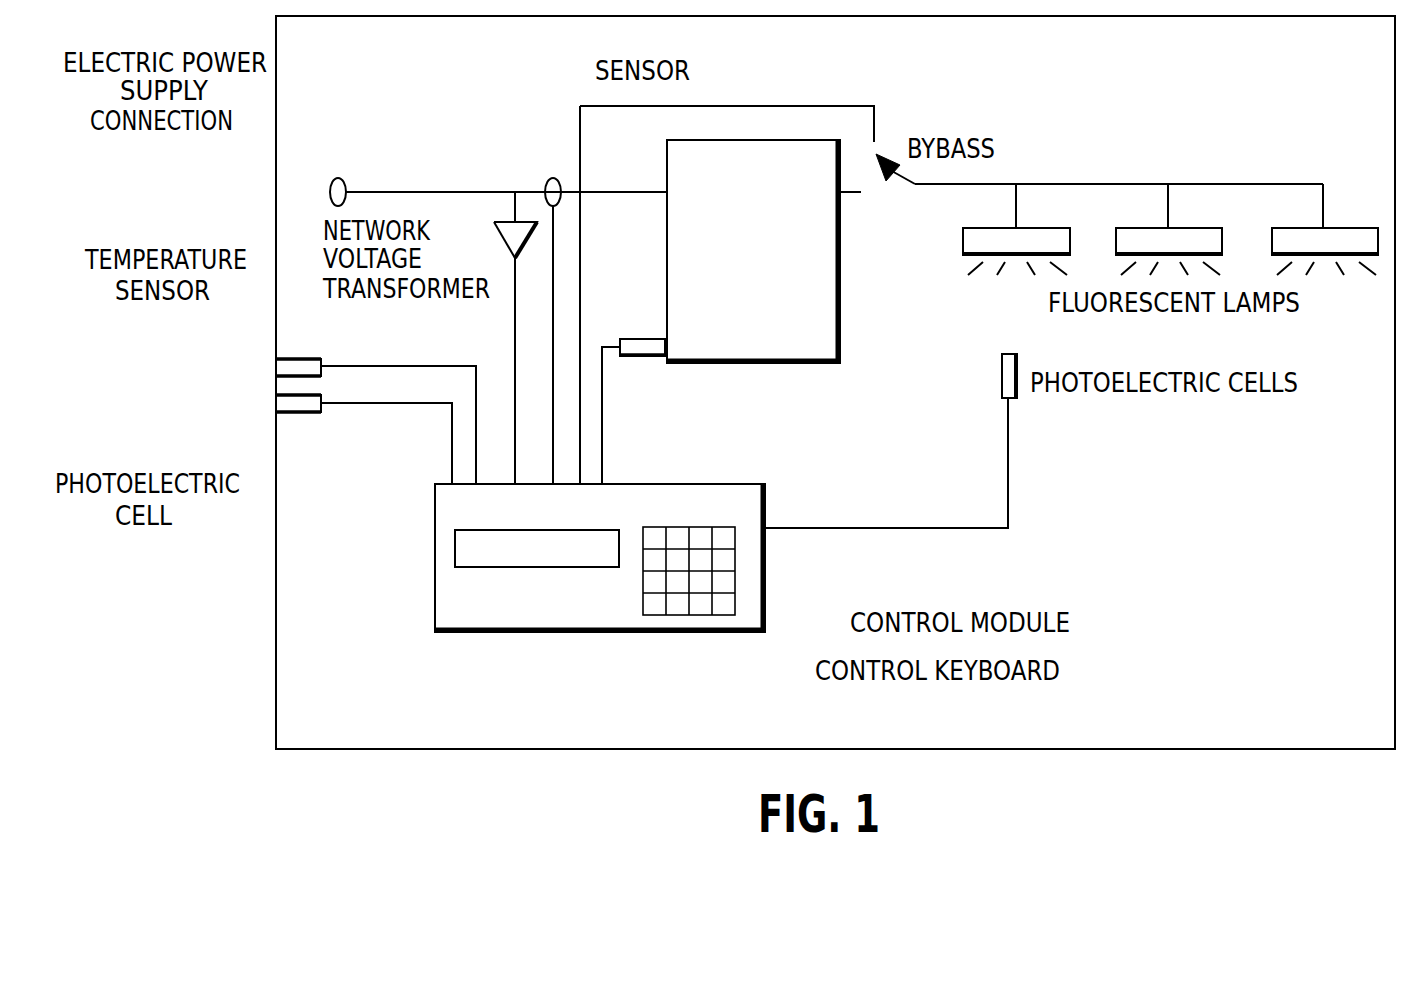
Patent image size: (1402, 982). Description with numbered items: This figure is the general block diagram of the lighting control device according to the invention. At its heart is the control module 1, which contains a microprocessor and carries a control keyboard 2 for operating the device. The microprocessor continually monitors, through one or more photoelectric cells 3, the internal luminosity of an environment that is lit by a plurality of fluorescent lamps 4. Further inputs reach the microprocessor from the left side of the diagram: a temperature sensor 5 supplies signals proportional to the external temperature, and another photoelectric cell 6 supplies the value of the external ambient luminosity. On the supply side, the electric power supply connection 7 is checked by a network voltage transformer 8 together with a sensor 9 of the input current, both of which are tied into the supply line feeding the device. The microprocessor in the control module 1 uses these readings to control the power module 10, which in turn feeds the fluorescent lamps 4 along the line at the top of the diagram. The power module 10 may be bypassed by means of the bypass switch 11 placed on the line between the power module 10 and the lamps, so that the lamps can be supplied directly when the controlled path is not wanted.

The control module 1 is at (766, 586).
The control keyboard 2 is at (700, 583).
The photoelectric cells 3 is at (1000, 377).
The fluorescent lamps 4 is at (1031, 227).
The temperature sensor 5 is at (290, 358).
The photoelectric cell 6 is at (303, 412).
The electric power supply connection 7 is at (338, 178).
The network voltage transformer 8 is at (500, 240).
The sensor 9 is at (547, 176).
The power module 10 is at (725, 368).
The bypass switch 11 is at (887, 147).